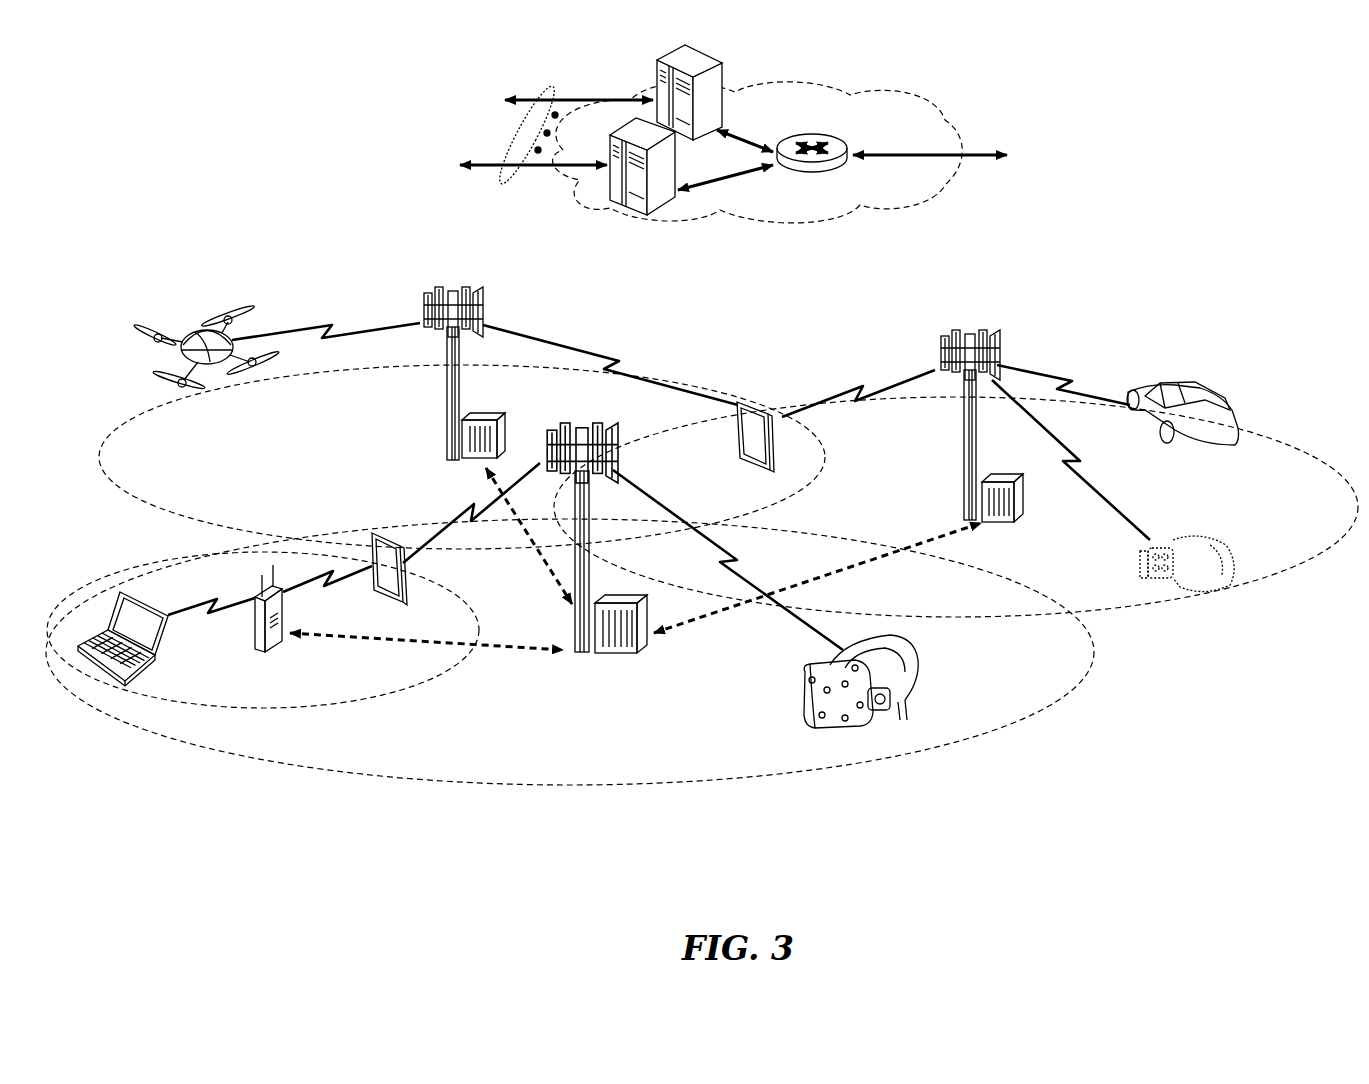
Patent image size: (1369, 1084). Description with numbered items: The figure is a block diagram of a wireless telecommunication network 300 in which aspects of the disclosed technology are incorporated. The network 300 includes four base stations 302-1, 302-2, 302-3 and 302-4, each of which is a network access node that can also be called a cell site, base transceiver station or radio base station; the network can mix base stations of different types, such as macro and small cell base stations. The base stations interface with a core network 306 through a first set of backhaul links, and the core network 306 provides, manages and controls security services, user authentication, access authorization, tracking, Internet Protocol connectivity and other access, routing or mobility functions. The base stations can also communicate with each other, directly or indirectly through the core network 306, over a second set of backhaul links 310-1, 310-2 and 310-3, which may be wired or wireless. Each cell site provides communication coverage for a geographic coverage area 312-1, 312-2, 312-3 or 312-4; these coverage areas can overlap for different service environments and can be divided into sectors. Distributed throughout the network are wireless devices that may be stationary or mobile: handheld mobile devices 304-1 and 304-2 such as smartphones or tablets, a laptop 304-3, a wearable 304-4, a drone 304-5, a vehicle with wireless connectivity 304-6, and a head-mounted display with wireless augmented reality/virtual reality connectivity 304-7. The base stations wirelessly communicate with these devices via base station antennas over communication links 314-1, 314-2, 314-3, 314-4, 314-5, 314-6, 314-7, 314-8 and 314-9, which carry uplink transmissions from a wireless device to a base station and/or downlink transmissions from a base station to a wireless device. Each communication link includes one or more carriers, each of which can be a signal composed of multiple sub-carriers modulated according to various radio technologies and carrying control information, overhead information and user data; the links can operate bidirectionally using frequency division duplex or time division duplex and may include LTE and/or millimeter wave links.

The wireless telecommunication network 300 is at (1257, 147).
The base station 302-1 is at (580, 655).
The base station 302-2 is at (447, 405).
The base station 302-3 is at (962, 440).
The base station 302-4 is at (256, 640).
The handheld mobile device 304-1 is at (406, 578).
The handheld mobile device 304-2 is at (735, 440).
The laptop 304-3 is at (100, 680).
The wearable 304-4 is at (1165, 540).
The drone 304-5 is at (215, 373).
The vehicle with wireless connectivity 304-6 is at (1212, 388).
The head-mounted display 304-7 is at (918, 670).
The core network 306 is at (848, 222).
The backhaul link 310-1 is at (322, 640).
The backhaul link 310-2 is at (885, 562).
The backhaul link 310-3 is at (545, 562).
The geographic coverage area 312-1 is at (510, 786).
The geographic coverage area 312-2 is at (388, 692).
The geographic coverage area 312-3 is at (165, 510).
The geographic coverage area 312-4 is at (1264, 437).
The communication link 314-1 is at (745, 565).
The communication link 314-2 is at (468, 511).
The communication link 314-3 is at (182, 613).
The communication link 314-4 is at (323, 590).
The communication link 314-5 is at (330, 324).
The communication link 314-6 is at (612, 352).
The communication link 314-7 is at (855, 382).
The communication link 314-8 is at (1088, 480).
The communication link 314-9 is at (1058, 375).